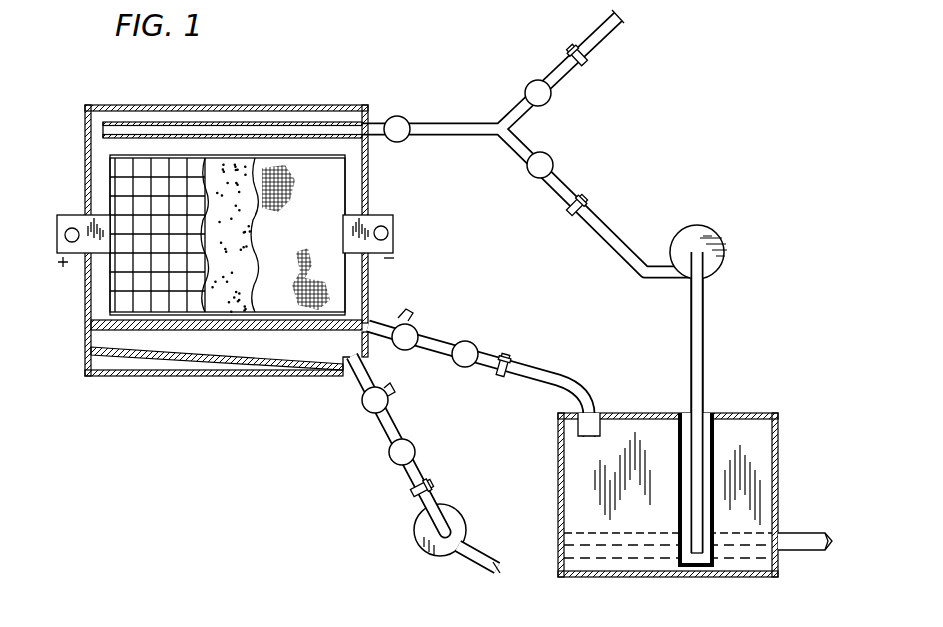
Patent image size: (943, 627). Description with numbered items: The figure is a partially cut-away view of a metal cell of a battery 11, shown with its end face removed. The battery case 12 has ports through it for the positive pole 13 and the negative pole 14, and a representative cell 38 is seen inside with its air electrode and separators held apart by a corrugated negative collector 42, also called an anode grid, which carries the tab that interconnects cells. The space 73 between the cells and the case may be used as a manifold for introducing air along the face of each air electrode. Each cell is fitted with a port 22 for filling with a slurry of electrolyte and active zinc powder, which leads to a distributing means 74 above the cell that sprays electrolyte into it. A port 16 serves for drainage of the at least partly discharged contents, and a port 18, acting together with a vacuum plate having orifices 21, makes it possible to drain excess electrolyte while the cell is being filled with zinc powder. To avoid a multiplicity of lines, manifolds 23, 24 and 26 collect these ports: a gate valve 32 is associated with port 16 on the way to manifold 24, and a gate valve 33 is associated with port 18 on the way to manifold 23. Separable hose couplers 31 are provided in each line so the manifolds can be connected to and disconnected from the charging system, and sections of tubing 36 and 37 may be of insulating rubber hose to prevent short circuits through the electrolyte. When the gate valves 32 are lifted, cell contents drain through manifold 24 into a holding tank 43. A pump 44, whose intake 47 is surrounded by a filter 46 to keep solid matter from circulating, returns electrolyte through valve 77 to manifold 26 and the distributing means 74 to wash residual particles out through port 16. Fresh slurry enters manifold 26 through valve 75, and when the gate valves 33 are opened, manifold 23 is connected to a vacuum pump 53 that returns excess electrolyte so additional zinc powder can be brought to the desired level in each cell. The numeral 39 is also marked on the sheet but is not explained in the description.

The battery 11 is at (150, 380).
The battery case 12 is at (85, 298).
The positive pole 13 is at (57, 240).
The negative pole 14 is at (393, 243).
The port 16 is at (377, 322).
The port 18 is at (350, 385).
The orifices 21 is at (256, 332).
The ports 22 is at (366, 120).
The manifold 23 is at (418, 450).
The manifold 24 is at (478, 344).
The manifold 26 is at (406, 116).
The separable hose couplers 31 is at (585, 62).
The gate valve 32 is at (420, 330).
The gate valve 33 is at (362, 408).
The section of tubing 36 is at (392, 436).
The section of tubing 37 is at (435, 348).
The cell 38 is at (108, 180).
The element 39 is at (339, 619).
The negative collector 42 is at (134, 620).
The holding tank 43 is at (572, 578).
The pump 44 is at (714, 230).
The filter 46 is at (686, 512).
The intake 47 is at (691, 568).
The vacuum pump 53 is at (464, 533).
The space 73 is at (85, 355).
The distributing means 74 is at (305, 123).
The valve 75 is at (529, 82).
The valve 77 is at (555, 162).